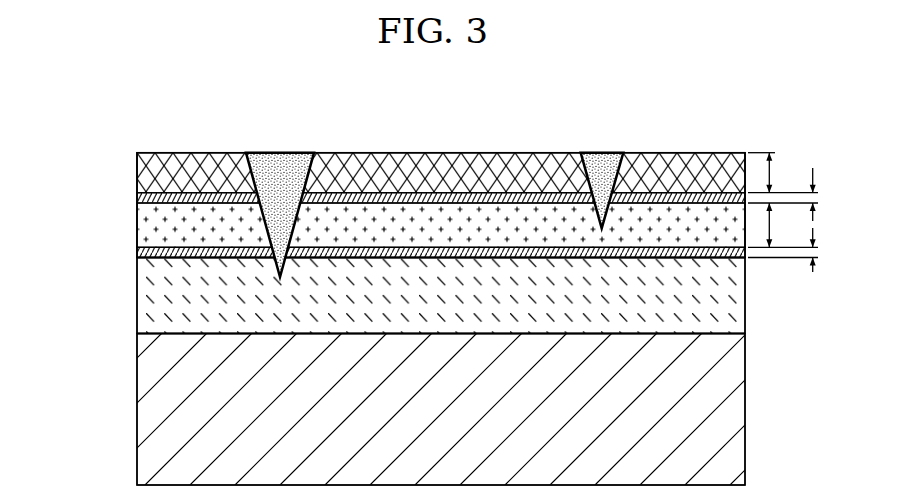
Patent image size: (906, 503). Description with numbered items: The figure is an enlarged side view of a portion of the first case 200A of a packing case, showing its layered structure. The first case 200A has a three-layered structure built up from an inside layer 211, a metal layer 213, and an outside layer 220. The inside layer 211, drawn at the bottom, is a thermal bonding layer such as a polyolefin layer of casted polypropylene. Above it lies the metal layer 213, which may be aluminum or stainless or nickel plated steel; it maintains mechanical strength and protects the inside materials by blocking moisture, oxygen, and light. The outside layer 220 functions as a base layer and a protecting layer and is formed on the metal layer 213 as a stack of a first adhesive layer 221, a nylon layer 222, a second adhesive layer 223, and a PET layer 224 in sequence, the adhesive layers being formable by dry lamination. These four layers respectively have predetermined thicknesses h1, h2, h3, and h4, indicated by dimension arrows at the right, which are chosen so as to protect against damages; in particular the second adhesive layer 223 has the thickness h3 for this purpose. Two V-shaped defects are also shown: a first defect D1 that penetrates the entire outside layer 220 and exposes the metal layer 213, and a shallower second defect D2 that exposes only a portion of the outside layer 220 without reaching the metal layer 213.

The first case 200A is at (691, 146).
The inside layer 211 is at (143, 424).
The metal layer 213 is at (137, 299).
The outside layer 220 is at (72, 158).
The first adhesive layer 221 is at (137, 252).
The nylon layer 222 is at (137, 227).
The second adhesive layer 223 is at (137, 198).
The PET layer 224 is at (137, 167).
The first defect D1 is at (280, 201).
The second defect D2 is at (602, 176).
The thickness of the first adhesive layer h1 is at (825, 250).
The thickness of the nylon layer h2 is at (780, 225).
The thickness of the second adhesive layer h3 is at (825, 194).
The thickness of the PET layer h4 is at (780, 173).